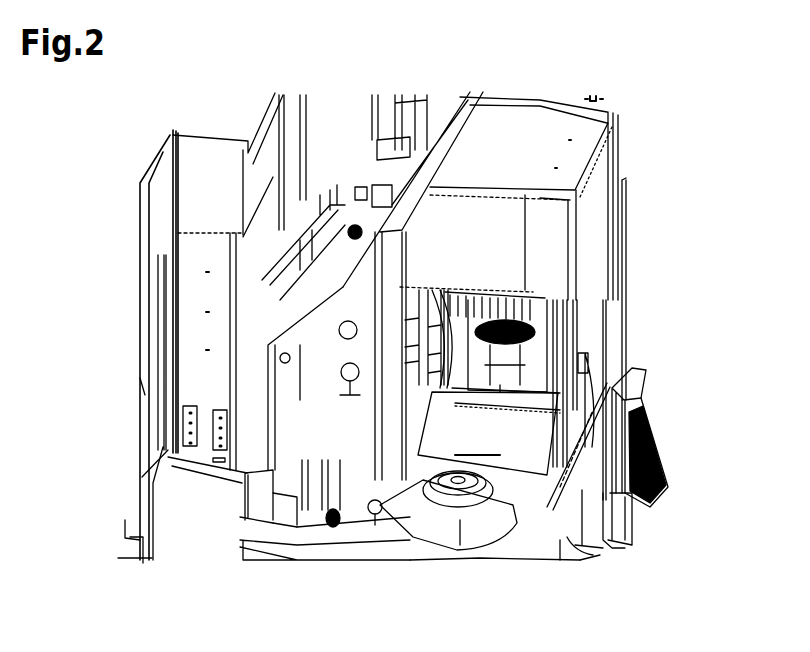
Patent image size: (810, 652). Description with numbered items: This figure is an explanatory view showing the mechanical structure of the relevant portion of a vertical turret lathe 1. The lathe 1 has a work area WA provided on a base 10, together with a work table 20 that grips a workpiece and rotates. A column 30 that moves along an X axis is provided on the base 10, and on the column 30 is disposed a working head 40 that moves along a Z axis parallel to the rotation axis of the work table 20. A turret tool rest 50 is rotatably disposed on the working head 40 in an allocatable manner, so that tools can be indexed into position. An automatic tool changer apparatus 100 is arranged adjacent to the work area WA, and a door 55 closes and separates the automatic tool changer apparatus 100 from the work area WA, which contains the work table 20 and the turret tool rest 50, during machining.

The vertical turret lathe 1 is at (574, 68).
The base 10 is at (566, 553).
The work table 20 is at (500, 498).
The column 30 is at (305, 368).
The working head 40 is at (508, 268).
The turret tool rest 50 is at (545, 300).
The door 55 is at (547, 288).
The automatic tool changer apparatus 100 is at (533, 362).